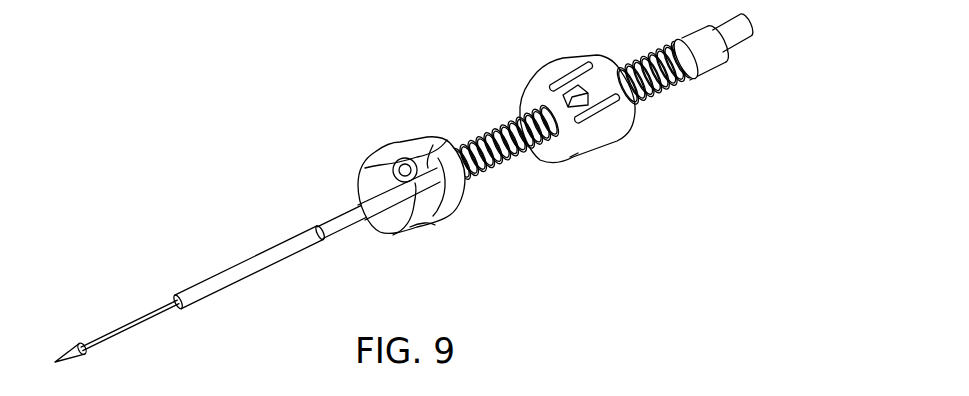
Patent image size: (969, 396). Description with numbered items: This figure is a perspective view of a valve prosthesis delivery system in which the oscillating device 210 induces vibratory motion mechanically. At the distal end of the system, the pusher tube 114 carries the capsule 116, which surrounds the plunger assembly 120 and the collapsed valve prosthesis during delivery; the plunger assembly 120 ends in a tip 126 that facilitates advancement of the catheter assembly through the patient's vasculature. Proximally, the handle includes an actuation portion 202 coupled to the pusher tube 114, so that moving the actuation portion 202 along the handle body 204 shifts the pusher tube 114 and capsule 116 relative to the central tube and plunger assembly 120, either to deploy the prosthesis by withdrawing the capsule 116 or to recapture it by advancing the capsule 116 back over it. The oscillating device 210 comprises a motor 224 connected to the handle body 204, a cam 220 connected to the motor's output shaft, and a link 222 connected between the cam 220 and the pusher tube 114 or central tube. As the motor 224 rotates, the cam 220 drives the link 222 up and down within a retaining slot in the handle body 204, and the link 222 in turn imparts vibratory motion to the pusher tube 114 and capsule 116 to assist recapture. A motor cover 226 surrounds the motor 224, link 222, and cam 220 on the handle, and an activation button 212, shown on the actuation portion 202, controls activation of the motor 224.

The pusher tube 114 is at (337, 216).
The capsule 116 is at (220, 273).
The plunger assembly 120 is at (112, 305).
The tip 126 is at (75, 348).
The actuation portion 202 is at (577, 116).
The handle body 204 is at (517, 165).
The oscillating device 210 is at (398, 181).
The activation button 212 is at (573, 92).
The cam 220 is at (391, 174).
The link 222 is at (407, 213).
The motor 224 is at (428, 158).
The motor cover 226 is at (452, 222).